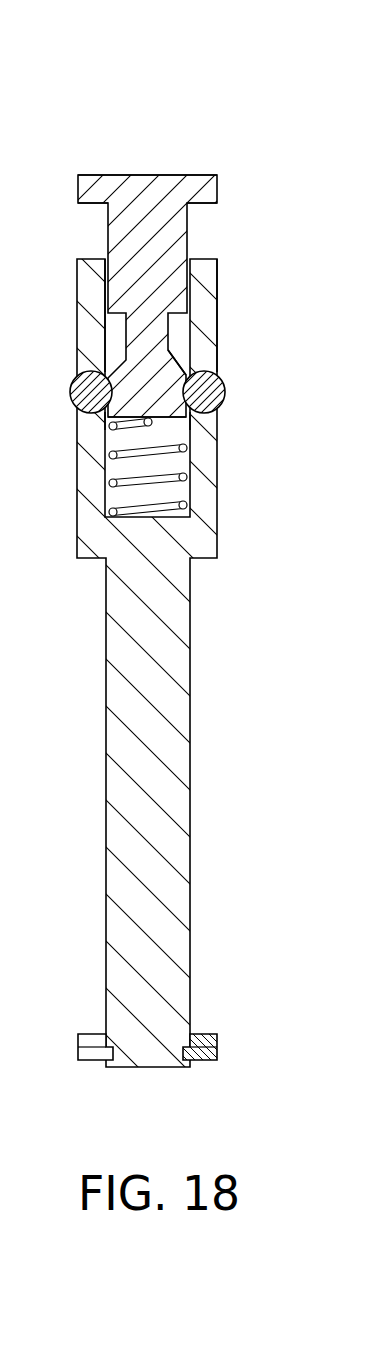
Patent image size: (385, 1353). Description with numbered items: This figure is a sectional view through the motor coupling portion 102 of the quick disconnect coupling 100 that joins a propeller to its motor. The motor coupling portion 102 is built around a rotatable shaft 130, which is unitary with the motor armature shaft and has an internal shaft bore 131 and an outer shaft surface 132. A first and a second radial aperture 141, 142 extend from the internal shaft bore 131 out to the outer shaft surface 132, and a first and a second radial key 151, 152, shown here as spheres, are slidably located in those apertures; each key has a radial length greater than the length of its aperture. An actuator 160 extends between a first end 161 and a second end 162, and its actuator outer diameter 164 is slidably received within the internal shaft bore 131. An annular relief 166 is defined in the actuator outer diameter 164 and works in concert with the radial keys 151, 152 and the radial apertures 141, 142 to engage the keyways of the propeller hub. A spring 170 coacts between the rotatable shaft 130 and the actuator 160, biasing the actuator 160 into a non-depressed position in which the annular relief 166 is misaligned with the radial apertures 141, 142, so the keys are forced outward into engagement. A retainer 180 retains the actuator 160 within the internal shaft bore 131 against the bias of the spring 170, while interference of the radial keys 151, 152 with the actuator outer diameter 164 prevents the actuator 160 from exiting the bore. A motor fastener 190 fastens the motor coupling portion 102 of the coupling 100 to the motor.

The coupling 100 is at (215, 77).
The motor coupling portion 102 is at (100, 77).
The rotatable shaft 130 is at (218, 553).
The internal shaft bore 131 is at (106, 316).
The outer shaft surface 132 is at (218, 283).
The first radial aperture 141 is at (214, 410).
The second radial aperture 142 is at (82, 408).
The first radial key 151 is at (212, 388).
The second radial key 152 is at (83, 390).
The actuator 160 is at (137, 197).
The first end 161 is at (97, 172).
The second end 162 is at (155, 418).
The actuator outer diameter 164 is at (108, 220).
The annular relief 166 is at (175, 344).
The spring 170 is at (108, 492).
The retainer 180 is at (203, 1040).
The motor fastener 190 is at (78, 1055).